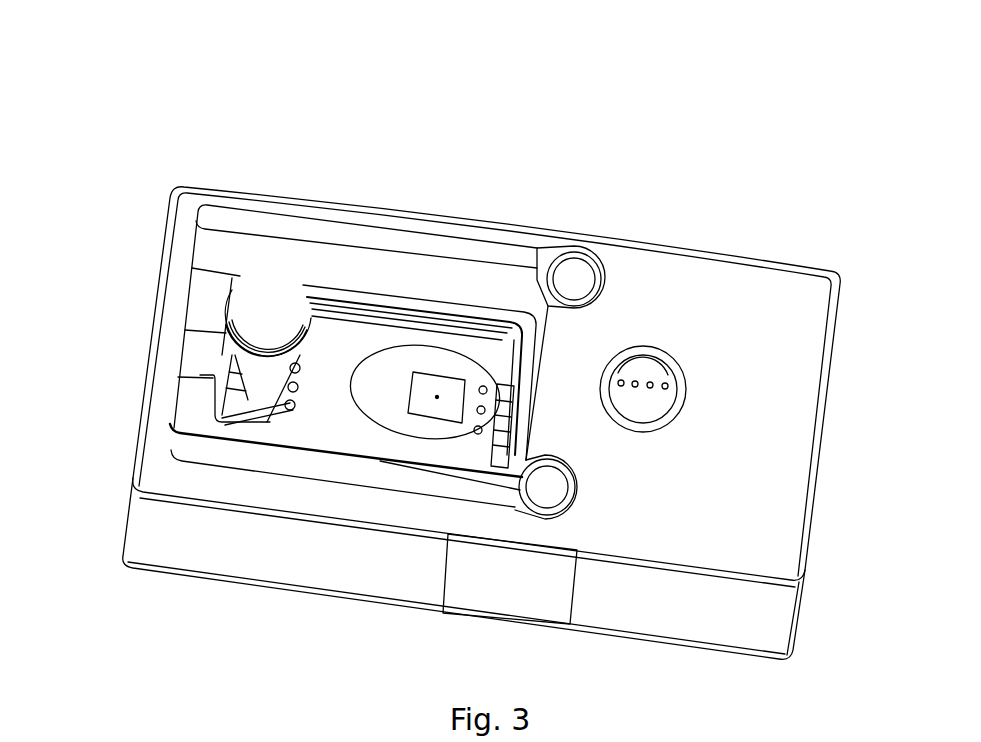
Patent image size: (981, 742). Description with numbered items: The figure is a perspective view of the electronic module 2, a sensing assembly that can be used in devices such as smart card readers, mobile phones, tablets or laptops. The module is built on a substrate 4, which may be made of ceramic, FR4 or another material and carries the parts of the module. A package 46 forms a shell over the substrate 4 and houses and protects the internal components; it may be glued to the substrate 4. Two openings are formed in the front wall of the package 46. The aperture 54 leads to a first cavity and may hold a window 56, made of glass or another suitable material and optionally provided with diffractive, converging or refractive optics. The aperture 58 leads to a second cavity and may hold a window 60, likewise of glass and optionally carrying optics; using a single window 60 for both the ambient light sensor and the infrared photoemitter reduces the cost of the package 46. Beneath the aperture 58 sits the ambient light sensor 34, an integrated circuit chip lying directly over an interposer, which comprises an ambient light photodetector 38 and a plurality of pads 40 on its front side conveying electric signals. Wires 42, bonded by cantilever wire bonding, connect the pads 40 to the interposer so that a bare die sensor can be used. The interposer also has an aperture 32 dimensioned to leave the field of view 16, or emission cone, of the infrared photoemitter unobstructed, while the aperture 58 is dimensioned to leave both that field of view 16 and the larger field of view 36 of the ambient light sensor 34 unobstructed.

The electronic module 2 is at (351, 82).
The substrate 4 is at (750, 658).
The field of view 16 is at (250, 287).
The aperture 32 is at (278, 410).
The ambient light sensor 34 is at (347, 413).
The field of view 36 is at (402, 345).
The ambient light photodetector 38 is at (448, 410).
The pads 40 is at (481, 387).
The wires 42 is at (502, 383).
The package 46 is at (652, 298).
The aperture 54 is at (607, 377).
The window 56 is at (647, 397).
The aperture 58 is at (270, 205).
The window 60 is at (327, 270).